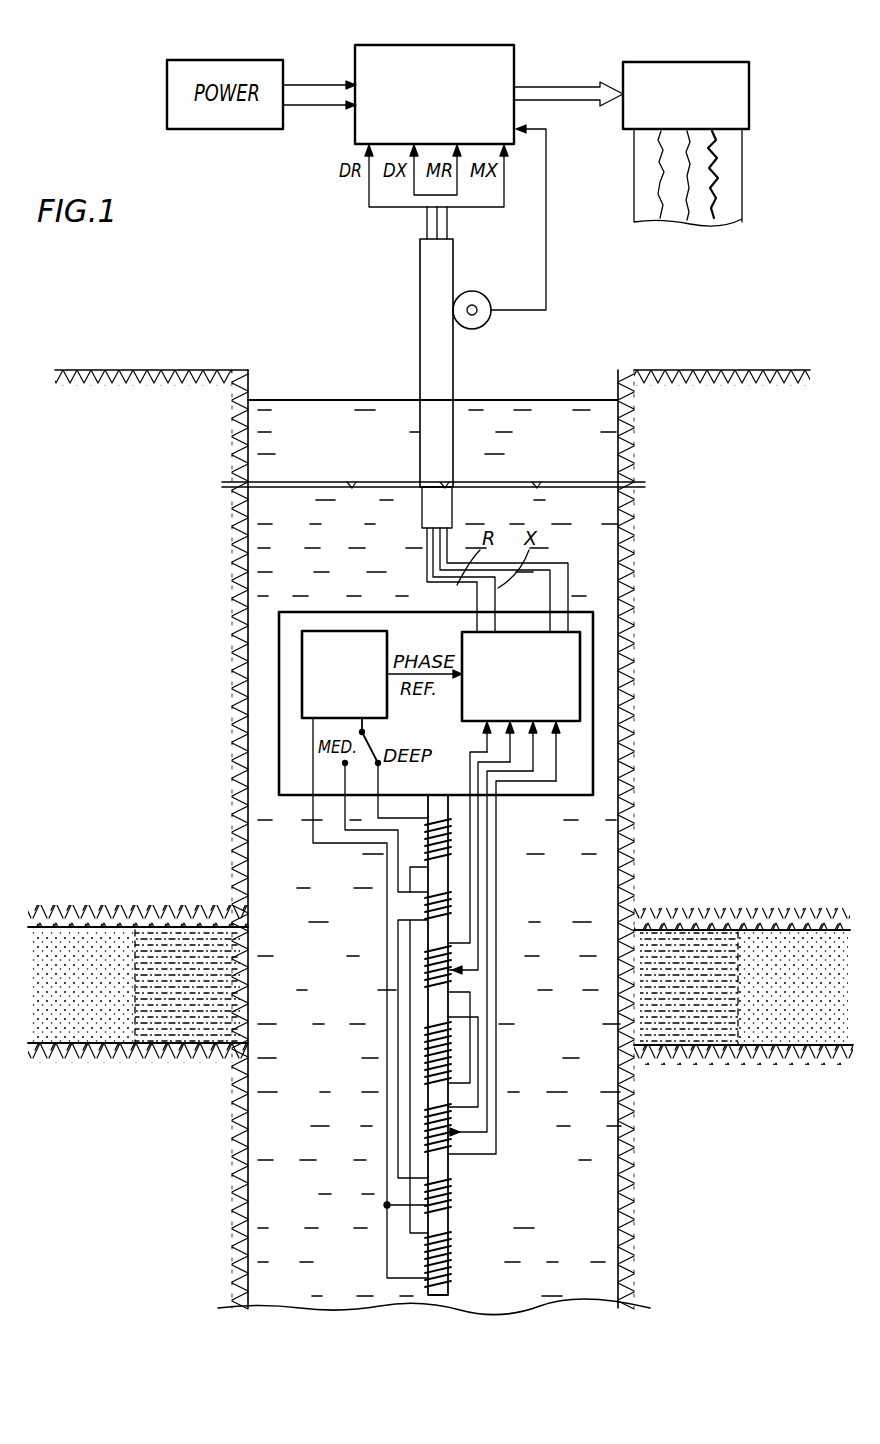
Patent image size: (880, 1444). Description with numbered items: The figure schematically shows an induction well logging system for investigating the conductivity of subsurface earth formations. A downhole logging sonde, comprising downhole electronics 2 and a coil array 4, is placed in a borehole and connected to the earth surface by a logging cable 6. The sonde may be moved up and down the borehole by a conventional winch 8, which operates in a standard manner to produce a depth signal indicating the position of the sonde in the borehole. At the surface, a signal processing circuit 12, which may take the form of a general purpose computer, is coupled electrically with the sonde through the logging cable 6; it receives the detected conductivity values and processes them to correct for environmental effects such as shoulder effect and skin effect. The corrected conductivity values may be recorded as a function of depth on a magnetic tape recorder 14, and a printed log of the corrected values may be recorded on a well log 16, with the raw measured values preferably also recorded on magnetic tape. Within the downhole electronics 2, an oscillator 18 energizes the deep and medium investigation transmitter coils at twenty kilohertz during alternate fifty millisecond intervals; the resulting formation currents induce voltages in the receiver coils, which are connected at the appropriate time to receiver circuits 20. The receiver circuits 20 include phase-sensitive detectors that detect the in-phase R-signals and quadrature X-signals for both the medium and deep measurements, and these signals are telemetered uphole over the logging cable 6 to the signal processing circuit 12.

The downhole electronics 2 is at (593, 748).
The coil array 4 is at (512, 904).
The logging cable 6 is at (420, 280).
The winch 8 is at (484, 294).
The signal processing circuit 12 is at (466, 44).
The magnetic tape recorder 14 is at (757, 98).
The well log 16 is at (752, 194).
The oscillator 18 is at (302, 670).
The receiver circuits 20 is at (580, 668).